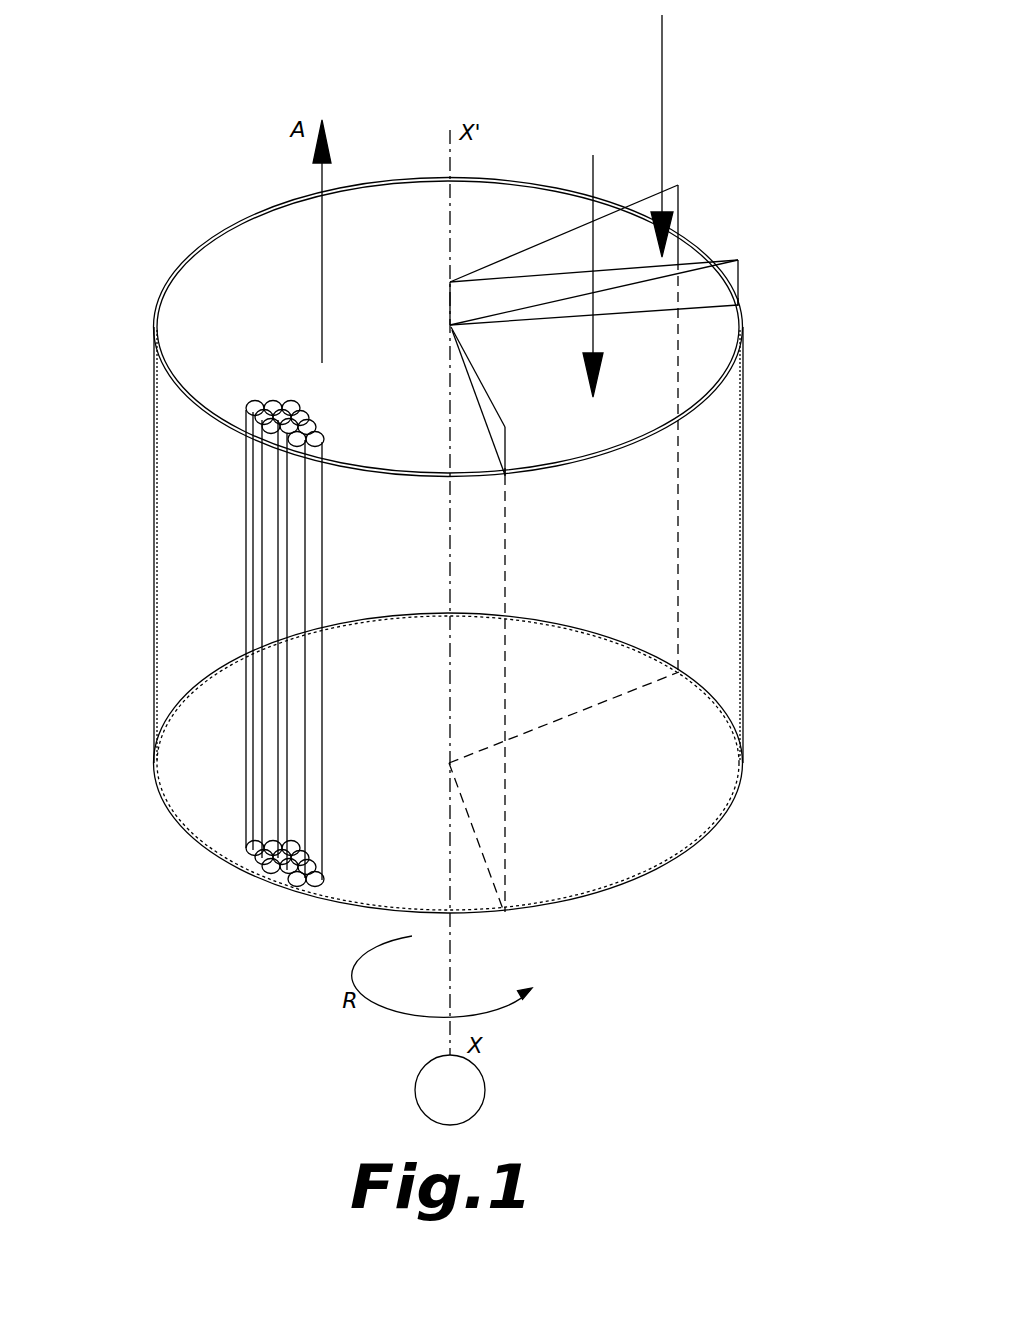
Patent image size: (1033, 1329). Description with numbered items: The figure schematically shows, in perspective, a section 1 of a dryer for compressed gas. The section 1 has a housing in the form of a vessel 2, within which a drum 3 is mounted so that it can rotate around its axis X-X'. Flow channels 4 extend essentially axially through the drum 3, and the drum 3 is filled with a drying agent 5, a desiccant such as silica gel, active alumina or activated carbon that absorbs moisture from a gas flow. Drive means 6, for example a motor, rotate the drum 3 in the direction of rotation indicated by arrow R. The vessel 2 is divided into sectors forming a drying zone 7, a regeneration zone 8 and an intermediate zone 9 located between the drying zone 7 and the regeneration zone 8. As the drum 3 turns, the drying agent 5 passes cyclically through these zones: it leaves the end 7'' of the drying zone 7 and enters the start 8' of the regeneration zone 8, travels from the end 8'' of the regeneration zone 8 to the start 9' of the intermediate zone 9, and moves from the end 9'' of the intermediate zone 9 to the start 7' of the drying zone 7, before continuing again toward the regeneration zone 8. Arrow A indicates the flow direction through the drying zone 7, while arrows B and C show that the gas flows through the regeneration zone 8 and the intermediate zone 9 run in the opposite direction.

The section 1 is at (222, 100).
The vessel 2 is at (86, 624).
The drum 3 is at (824, 610).
The flow channels 4 is at (300, 872).
The drying agent 5 is at (257, 399).
The drive means 6 is at (474, 1089).
The drying zone 7 is at (429, 327).
The start of the drying zone 7' is at (642, 128).
The end of the drying zone 7'' is at (511, 344).
The regeneration zone 8 is at (638, 619).
The start of the regeneration zone 8' is at (532, 497).
The end of the regeneration zone 8'' is at (789, 324).
The intermediate zone 9 is at (627, 264).
The start of the intermediate zone 9' is at (646, 295).
The end of the intermediate zone 9'' is at (604, 417).